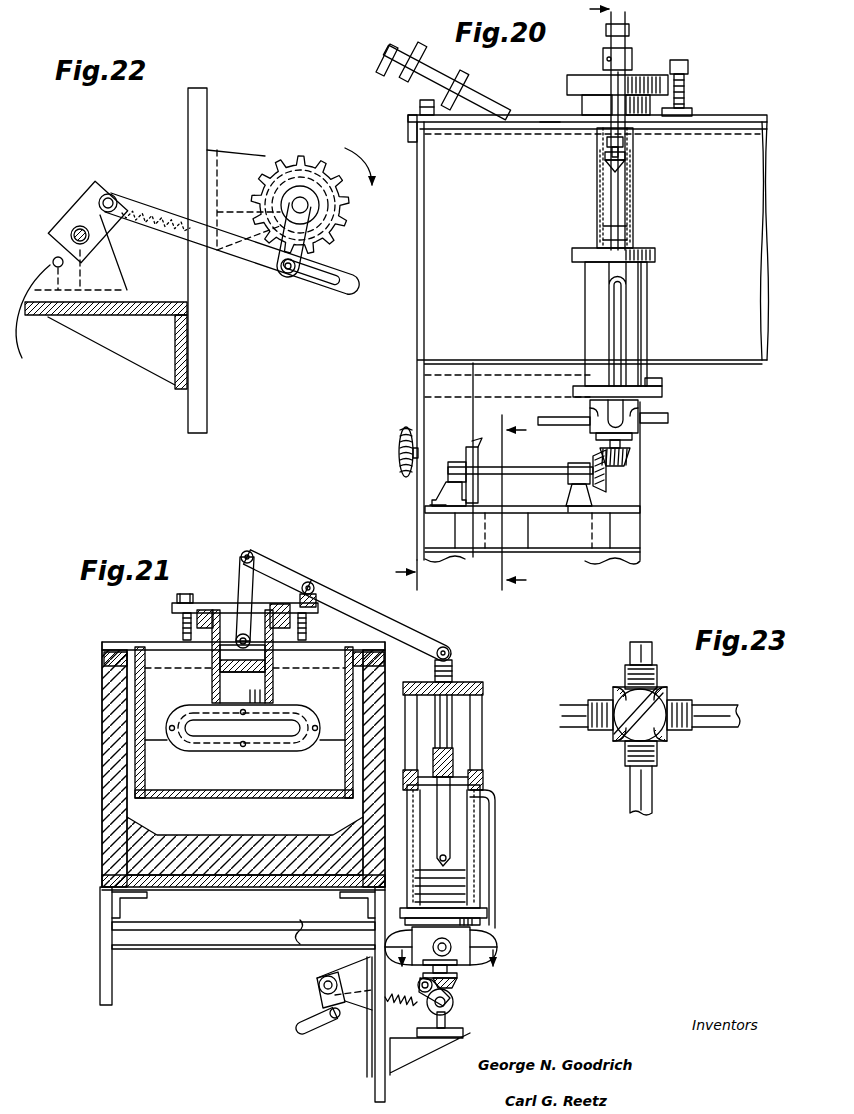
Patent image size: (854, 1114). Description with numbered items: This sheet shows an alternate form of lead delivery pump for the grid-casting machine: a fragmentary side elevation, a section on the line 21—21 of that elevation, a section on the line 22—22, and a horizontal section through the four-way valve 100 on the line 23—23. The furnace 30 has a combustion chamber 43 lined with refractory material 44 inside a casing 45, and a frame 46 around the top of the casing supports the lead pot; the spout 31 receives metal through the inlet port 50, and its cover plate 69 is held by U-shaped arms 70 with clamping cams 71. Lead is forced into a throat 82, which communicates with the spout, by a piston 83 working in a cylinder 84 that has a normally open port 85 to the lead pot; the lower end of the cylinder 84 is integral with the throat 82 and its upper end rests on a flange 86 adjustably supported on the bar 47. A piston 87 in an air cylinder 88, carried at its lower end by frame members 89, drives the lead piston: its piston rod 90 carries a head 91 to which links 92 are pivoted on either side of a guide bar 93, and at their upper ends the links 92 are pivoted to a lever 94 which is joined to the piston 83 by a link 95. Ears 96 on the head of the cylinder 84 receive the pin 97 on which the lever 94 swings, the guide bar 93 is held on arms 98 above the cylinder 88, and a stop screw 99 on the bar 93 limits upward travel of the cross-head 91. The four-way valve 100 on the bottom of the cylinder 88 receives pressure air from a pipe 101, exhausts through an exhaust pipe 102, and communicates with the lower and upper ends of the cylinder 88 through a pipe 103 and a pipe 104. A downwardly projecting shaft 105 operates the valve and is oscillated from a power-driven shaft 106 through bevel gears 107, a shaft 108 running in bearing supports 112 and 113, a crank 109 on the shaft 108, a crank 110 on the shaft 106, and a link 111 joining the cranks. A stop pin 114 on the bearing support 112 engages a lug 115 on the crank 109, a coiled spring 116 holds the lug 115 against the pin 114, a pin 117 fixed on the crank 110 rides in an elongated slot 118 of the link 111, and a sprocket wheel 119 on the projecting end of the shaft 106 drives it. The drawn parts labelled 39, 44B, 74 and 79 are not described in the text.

In FIG. 20, the section line 21— 21 is at (517, 295).
In FIG. 20, the section line 22— 22 is at (500, 502).
In FIG. 21, the section line 23— 23 is at (443, 967).
In FIG. 21, the furnace 30 is at (100, 727).
In FIG. 20, the spout 31 is at (418, 103).
In FIG. 20, the frame plate 39 is at (632, 503).
In FIG. 21, the frame plate 39 is at (110, 975).
In FIG. 22, the frame plate 39 is at (195, 406).
In FIG. 21, the combustion chamber 43 is at (244, 730).
In FIG. 21, the refractory material 44 is at (130, 857).
In FIG. 20, the bath liquid 44B is at (548, 128).
In FIG. 21, the bath liquid 44B is at (245, 680).
In FIG. 21, the casing 45 is at (102, 798).
In FIG. 21, the frame 46 is at (108, 658).
In FIG. 20, the bar 47 is at (695, 113).
In FIG. 21, the bar 47 is at (104, 645).
In FIG. 20, the inlet port 50 is at (593, 341).
In FIG. 20, the cover plate 69 is at (406, 50).
In FIG. 20, the U-shaped arms 70 is at (444, 75).
In FIG. 20, the clamping cams 71 is at (466, 85).
In FIG. 20, the bracket 74 is at (410, 123).
In FIG. 21, the bracket plate 79 is at (175, 605).
In FIG. 21, the throat 82 is at (215, 733).
In FIG. 21, the piston 83 is at (210, 645).
In FIG. 21, the cylinder 84 is at (264, 664).
In FIG. 21, the port 85 is at (270, 680).
In FIG. 20, the flange 86 is at (691, 90).
In FIG. 21, the piston 87 is at (472, 870).
In FIG. 20, the air cylinder 88 is at (640, 322).
In FIG. 21, the air cylinder 88 is at (470, 830).
In FIG. 20, the frame members 89 is at (650, 405).
In FIG. 21, the frame members 89 is at (320, 940).
In FIG. 21, the piston rod 90 is at (455, 768).
In FIG. 21, the head 91 is at (447, 745).
In FIG. 20, the links 92 is at (604, 140).
In FIG. 21, the links 92 is at (450, 710).
In FIG. 20, the guide bar 93 is at (622, 157).
In FIG. 21, the guide bar 93 is at (455, 707).
In FIG. 20, the lever 94 is at (610, 43).
In FIG. 21, the lever 94 is at (385, 622).
In FIG. 21, the link 95 is at (236, 572).
In FIG. 20, the ears 96 is at (658, 72).
In FIG. 21, the ears 96 is at (312, 578).
In FIG. 20, the pin 97 is at (632, 59).
In FIG. 21, the pin 97 is at (315, 583).
In FIG. 20, the arms 98 is at (600, 203).
In FIG. 21, the arms 98 is at (410, 712).
In FIG. 20, the stop screw 99 is at (632, 140).
In FIG. 21, the stop screw 99 is at (447, 660).
In FIG. 20, the four-way valve 100 is at (632, 437).
In FIG. 21, the four-way valve 100 is at (465, 985).
In FIG. 23, the four-way valve 100 is at (622, 740).
In FIG. 20, the pipe 101 is at (548, 418).
In FIG. 21, the pipe 101 is at (452, 945).
In FIG. 23, the pipe 101 is at (648, 790).
In FIG. 20, the exhaust pipe 102 is at (668, 419).
In FIG. 23, the exhaust pipe 102 is at (636, 655).
In FIG. 21, the pipe 103 is at (395, 912).
In FIG. 23, the pipe 103 is at (562, 700).
In FIG. 20, the pipe 104 is at (612, 335).
In FIG. 21, the pipe 104 is at (492, 905).
In FIG. 23, the pipe 104 is at (704, 710).
In FIG. 20, the shaft 105 is at (630, 452).
In FIG. 21, the shaft 105 is at (470, 982).
In FIG. 21, the power-driven shaft 106 is at (320, 983).
In FIG. 22, the power-driven shaft 106 is at (312, 205).
In FIG. 20, the bevel gears 107 is at (606, 478).
In FIG. 21, the bevel gears 107 is at (453, 1005).
In FIG. 20, the shaft 108 is at (578, 463).
In FIG. 21, the shaft 108 is at (447, 1015).
In FIG. 22, the shaft 108 is at (75, 222).
In FIG. 20, the crank 109 is at (454, 462).
In FIG. 22, the crank 109 is at (106, 194).
In FIG. 21, the crank 110 is at (322, 1003).
In FIG. 22, the crank 110 is at (340, 243).
In FIG. 20, the link 111 is at (472, 448).
In FIG. 21, the link 111 is at (352, 1012).
In FIG. 22, the link 111 is at (250, 258).
In FIG. 20, the bearing support 112 is at (448, 492).
In FIG. 21, the bearing support 112 is at (420, 1036).
In FIG. 22, the bearing support 112 is at (103, 268).
In FIG. 20, the bearing support 113 is at (568, 506).
In FIG. 20, the stop pin 114 is at (430, 505).
In FIG. 22, the stop pin 114 is at (33, 320).
In FIG. 22, the lug 115 is at (56, 312).
In FIG. 21, the coiled spring 116 is at (402, 1003).
In FIG. 22, the coiled spring 116 is at (142, 225).
In FIG. 21, the pin 117 is at (333, 1020).
In FIG. 22, the pin 117 is at (290, 275).
In FIG. 21, the elongated slot 118 is at (305, 1025).
In FIG. 22, the elongated slot 118 is at (343, 292).
In FIG. 20, the sprocket wheel 119 is at (402, 430).
In FIG. 22, the sprocket wheel 119 is at (302, 154).